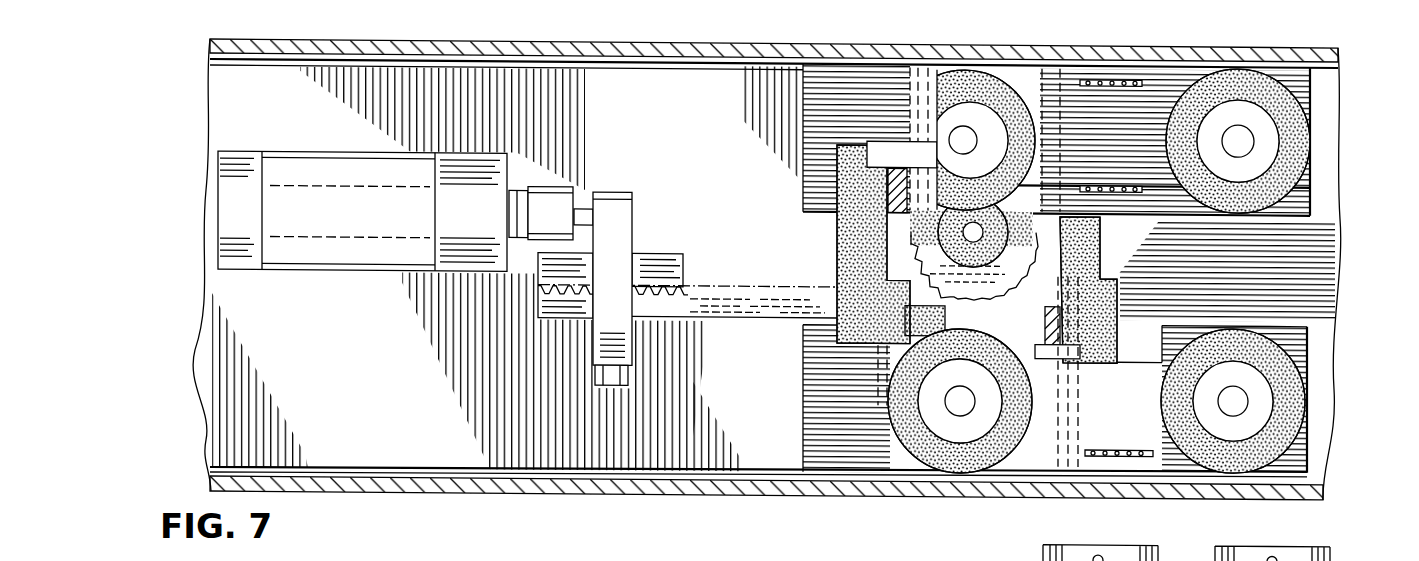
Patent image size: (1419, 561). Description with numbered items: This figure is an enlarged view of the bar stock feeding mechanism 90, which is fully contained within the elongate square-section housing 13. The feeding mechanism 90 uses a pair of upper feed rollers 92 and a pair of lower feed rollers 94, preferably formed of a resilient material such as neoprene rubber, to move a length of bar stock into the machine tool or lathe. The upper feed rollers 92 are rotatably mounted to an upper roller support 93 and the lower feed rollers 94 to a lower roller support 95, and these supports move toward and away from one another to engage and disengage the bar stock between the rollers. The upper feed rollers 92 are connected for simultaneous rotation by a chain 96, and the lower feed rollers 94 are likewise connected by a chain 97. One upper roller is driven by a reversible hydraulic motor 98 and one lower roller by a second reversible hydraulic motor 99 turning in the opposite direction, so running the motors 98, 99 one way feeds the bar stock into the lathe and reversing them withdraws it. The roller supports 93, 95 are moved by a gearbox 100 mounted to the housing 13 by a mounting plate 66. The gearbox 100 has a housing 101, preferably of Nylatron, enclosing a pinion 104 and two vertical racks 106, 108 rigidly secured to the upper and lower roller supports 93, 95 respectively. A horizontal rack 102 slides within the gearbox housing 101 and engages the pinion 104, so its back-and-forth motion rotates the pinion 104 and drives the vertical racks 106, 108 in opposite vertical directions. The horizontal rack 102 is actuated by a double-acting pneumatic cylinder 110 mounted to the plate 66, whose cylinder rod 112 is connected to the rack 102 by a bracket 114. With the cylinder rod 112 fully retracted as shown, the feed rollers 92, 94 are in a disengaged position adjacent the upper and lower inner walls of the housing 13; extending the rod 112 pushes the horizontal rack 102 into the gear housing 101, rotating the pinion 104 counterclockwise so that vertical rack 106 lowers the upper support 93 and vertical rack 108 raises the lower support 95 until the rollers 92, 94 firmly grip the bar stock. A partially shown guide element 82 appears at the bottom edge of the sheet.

The housing 13 is at (793, 489).
The mounting plate 66 is at (226, 374).
The guide block 82 is at (1193, 552).
The bar stock feeding mechanism 90 is at (774, 439).
The upper feed rollers 92 is at (1035, 114).
The upper roller support 93 is at (1302, 62).
The lower feed rollers 94 is at (937, 456).
The lower roller support 95 is at (1302, 333).
The chain 96 is at (1155, 198).
The chain 97 is at (1106, 466).
The reversible hydraulic motor 98 is at (1313, 158).
The second reversible hydraulic motor 99 is at (1310, 364).
The gearbox 100 is at (820, 241).
The gearbox housing 101 is at (1118, 305).
The horizontal rack 102 is at (719, 305).
The pinion 104 is at (1033, 210).
The vertical rack 106 is at (900, 287).
The vertical rack 108 is at (1045, 323).
The double-acting pneumatic cylinder 110 is at (330, 224).
The cylinder rod 112 is at (582, 197).
The bracket 114 is at (618, 231).